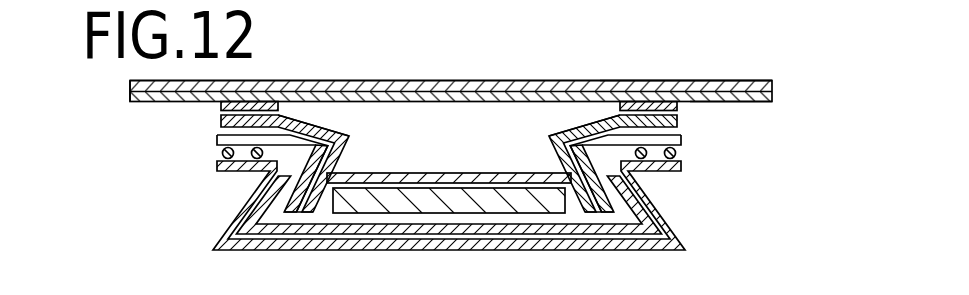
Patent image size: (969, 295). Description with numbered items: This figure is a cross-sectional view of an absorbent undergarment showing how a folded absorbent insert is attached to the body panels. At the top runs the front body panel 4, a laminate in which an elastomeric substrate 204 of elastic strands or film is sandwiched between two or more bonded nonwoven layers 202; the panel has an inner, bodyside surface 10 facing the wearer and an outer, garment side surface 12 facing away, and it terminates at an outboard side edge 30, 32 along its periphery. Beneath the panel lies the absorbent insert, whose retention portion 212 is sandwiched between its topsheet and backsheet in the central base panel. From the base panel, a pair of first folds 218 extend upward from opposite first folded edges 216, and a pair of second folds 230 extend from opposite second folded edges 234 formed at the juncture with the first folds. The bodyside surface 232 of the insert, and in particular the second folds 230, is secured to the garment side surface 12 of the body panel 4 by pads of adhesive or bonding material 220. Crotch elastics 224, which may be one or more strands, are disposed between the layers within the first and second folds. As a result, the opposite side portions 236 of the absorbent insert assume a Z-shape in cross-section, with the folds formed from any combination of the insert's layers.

The first, front body panel 4 is at (629, 80).
The inner, bodyside surface 10 is at (680, 80).
The outer, garment side surface 12 is at (713, 102).
The outboard side edge 30 is at (772, 91).
The outboard side edge 32 is at (130, 90).
The layers 202 is at (697, 81).
The elastomeric substrate 204 is at (753, 83).
The retention portion 212 is at (452, 204).
The first folded edges 216 is at (213, 250).
The first folds 218 is at (245, 217).
The adhesive pad 220 is at (258, 102).
The crotch elastics 224 is at (247, 172).
The second folds 230 is at (300, 120).
The bodyside surface 232 is at (340, 131).
The second folded edges 234 is at (343, 141).
The opposite side portions 236 is at (158, 203).